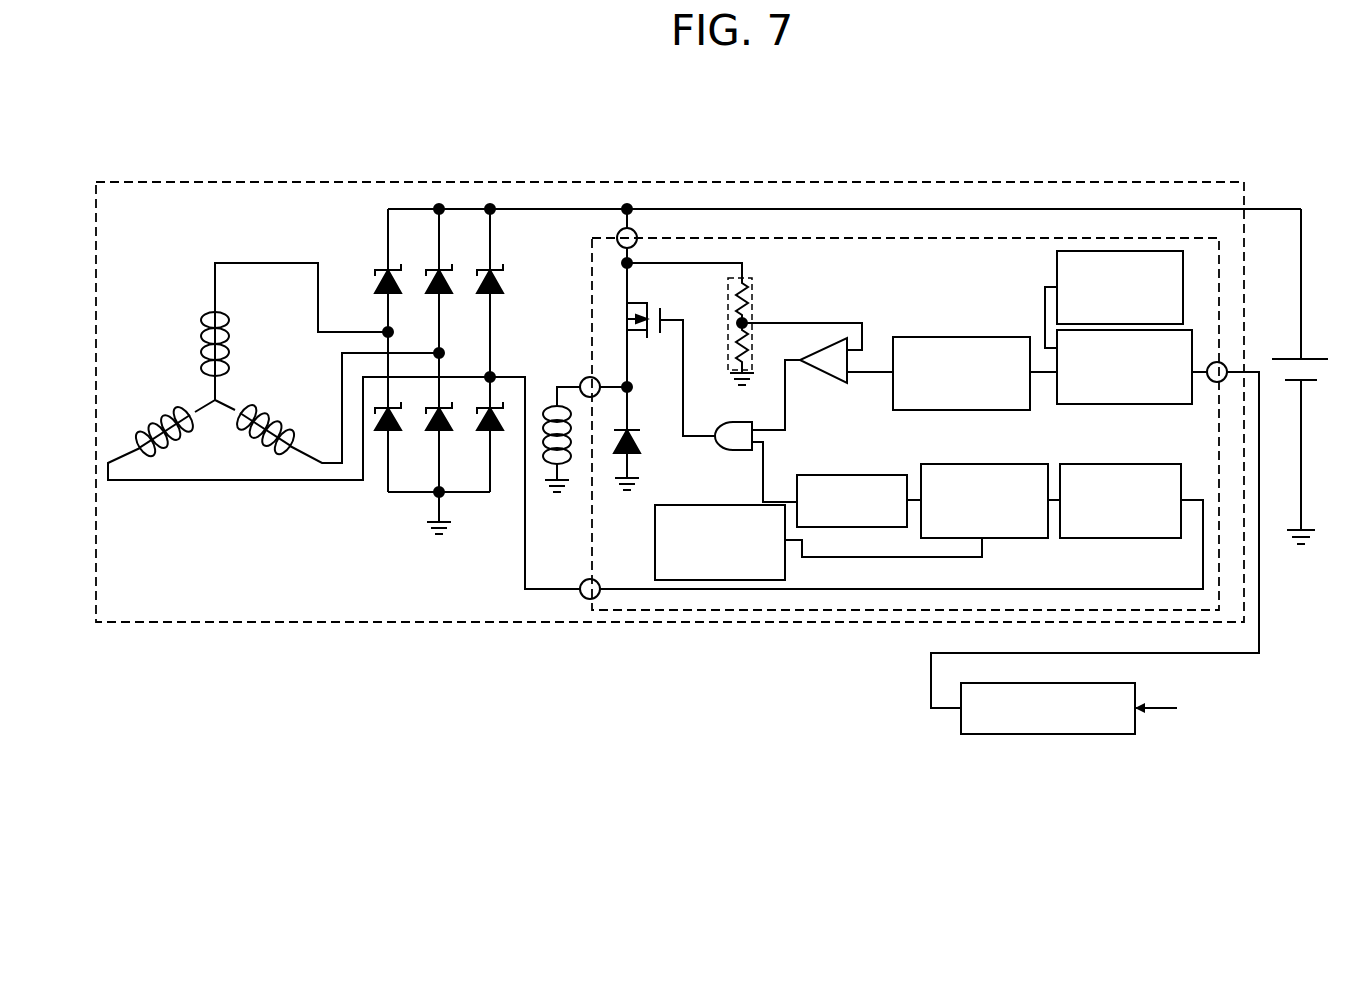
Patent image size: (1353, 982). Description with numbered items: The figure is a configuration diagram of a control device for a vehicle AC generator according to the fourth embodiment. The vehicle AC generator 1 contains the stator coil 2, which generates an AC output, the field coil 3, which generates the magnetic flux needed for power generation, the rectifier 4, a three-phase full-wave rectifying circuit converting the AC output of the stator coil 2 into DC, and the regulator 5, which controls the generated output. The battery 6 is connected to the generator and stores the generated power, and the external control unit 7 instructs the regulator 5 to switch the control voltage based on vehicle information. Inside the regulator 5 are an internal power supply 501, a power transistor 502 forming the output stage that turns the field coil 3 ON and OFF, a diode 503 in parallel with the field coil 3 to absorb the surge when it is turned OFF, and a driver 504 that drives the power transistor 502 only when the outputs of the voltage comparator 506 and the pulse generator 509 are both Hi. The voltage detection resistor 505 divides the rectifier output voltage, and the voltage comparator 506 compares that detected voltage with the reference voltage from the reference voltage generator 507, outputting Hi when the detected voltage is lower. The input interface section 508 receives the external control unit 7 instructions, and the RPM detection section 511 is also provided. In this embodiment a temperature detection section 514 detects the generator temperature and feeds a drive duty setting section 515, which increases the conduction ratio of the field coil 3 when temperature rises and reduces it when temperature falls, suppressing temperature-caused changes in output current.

The vehicle AC generator 1 is at (437, 182).
The stator coil 2 is at (210, 318).
The field coil 3 is at (557, 395).
The rectifier 4 is at (388, 240).
The regulator 5 is at (688, 238).
The battery 6 is at (1320, 358).
The external control unit 7 is at (1067, 736).
The internal power supply 501 is at (1057, 268).
The power transistor 502 is at (627, 313).
The diode 503 is at (640, 447).
The driver 504 is at (727, 453).
The voltage detection resistor 505 is at (750, 282).
The voltage comparator 506 is at (832, 345).
The reference voltage generator 507 is at (912, 336).
The input interface section 508 is at (1150, 406).
The pulse generator 509 is at (830, 475).
The RPM detection section 511 is at (1080, 462).
The temperature detection section 514 is at (655, 540).
The drive duty setting section 515 is at (948, 462).